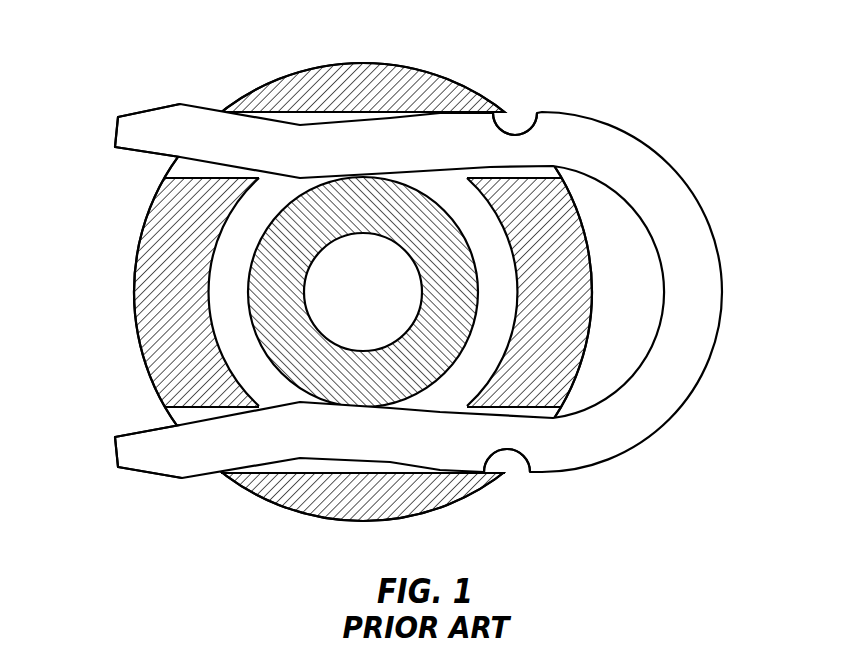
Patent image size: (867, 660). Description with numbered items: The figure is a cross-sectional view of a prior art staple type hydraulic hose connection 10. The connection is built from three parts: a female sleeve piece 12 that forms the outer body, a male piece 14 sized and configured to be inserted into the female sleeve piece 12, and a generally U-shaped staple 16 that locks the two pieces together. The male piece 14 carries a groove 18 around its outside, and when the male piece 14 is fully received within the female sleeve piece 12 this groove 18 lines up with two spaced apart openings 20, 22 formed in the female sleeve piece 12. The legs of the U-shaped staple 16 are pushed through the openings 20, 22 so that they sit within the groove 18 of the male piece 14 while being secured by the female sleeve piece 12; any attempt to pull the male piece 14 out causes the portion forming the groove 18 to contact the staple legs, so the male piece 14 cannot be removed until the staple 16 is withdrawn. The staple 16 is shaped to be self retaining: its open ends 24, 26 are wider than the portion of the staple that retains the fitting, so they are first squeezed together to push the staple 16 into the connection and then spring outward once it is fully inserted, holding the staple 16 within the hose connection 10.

The staple type hose connection 10 is at (248, 531).
The female sleeve piece 12 is at (167, 338).
The male piece 14 is at (277, 263).
The U-shaped staple 16 is at (643, 474).
The groove 18 is at (228, 287).
The opening 20 is at (527, 126).
The opening 22 is at (522, 465).
The open end 24 is at (147, 125).
The open end 26 is at (140, 458).